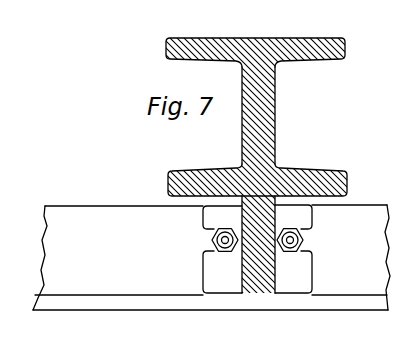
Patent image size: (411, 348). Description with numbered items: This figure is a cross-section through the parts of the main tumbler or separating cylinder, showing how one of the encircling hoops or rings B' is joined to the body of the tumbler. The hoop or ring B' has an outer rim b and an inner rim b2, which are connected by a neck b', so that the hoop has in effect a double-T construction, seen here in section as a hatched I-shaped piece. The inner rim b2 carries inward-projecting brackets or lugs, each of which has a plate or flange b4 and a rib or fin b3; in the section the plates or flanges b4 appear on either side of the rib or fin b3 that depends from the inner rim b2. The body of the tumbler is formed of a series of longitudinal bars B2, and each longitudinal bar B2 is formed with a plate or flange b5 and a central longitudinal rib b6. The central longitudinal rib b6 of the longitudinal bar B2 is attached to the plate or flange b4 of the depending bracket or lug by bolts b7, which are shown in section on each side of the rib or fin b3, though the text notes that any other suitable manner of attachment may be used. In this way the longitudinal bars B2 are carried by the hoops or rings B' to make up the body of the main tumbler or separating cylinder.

The encircling hoop or ring B' is at (205, 154).
The outer rim b is at (255, 44).
The neck b' is at (266, 115).
The inner rim b2 is at (312, 170).
The rib or fin b3 is at (243, 258).
The plate or flange b4 is at (257, 248).
The bolts b7 is at (323, 229).
The central longitudinal rib b6 is at (216, 224).
The longitudinal bar B2 is at (211, 257).
The plate or flange b5 is at (100, 305).